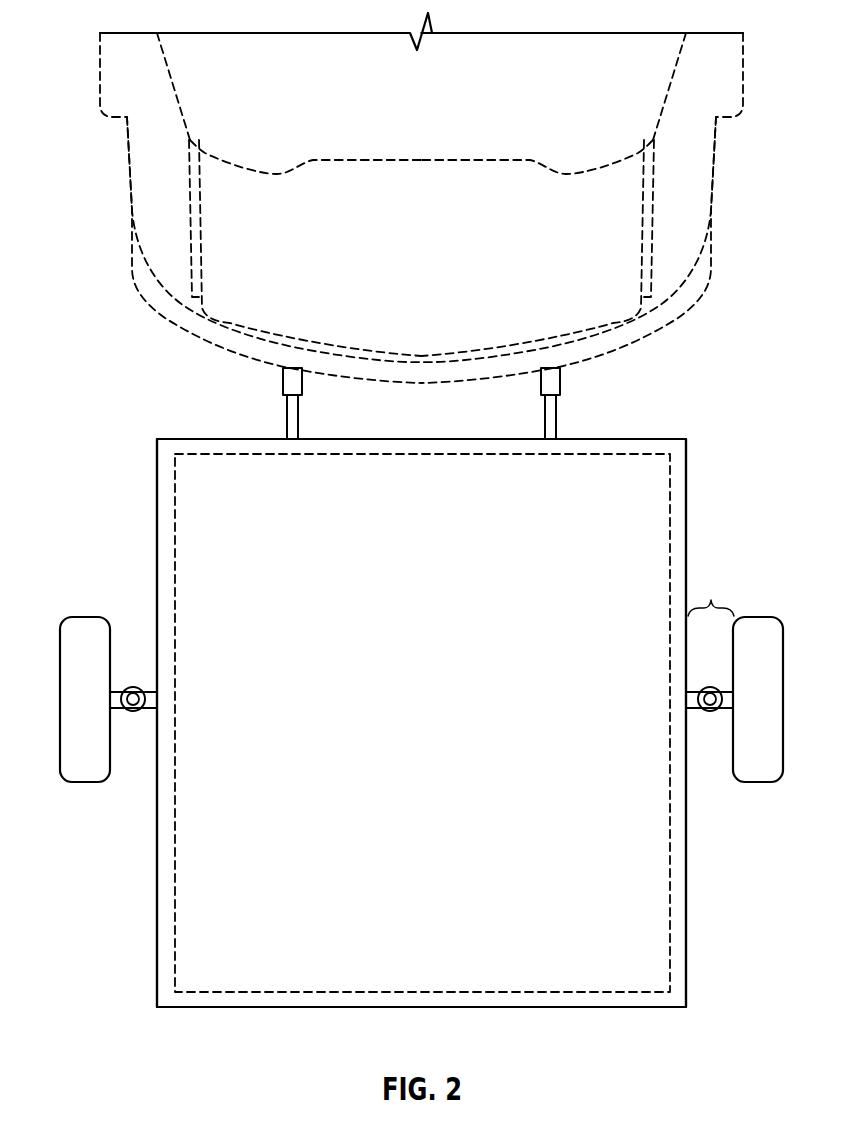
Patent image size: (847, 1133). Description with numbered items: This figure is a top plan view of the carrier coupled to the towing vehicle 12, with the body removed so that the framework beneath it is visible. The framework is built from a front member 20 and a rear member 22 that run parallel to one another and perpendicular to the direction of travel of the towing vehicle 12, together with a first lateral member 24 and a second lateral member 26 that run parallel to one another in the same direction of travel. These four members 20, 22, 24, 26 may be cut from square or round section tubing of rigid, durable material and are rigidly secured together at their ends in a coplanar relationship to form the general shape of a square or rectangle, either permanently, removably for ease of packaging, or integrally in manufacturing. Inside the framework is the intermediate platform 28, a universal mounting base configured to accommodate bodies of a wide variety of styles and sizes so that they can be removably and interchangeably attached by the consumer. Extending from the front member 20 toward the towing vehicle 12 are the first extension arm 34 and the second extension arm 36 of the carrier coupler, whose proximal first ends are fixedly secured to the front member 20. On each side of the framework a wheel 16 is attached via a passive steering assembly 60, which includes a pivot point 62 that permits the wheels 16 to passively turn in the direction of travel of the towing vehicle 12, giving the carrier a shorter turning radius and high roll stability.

The towing vehicle 12 is at (437, 268).
The wheel 16 is at (85, 767).
The front member 20 is at (410, 438).
The rear member 22 is at (593, 998).
The first lateral member 24 is at (168, 542).
The second lateral member 26 is at (675, 545).
The platform 28 is at (414, 770).
The first extension arm 34 is at (283, 398).
The second extension arm 36 is at (558, 405).
The passive steering assembly 60 is at (711, 594).
The pivot point 62 is at (133, 713).